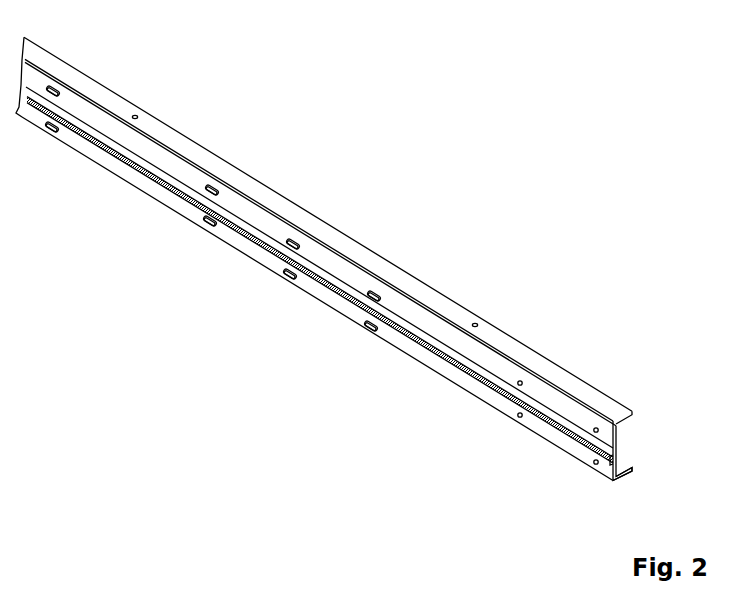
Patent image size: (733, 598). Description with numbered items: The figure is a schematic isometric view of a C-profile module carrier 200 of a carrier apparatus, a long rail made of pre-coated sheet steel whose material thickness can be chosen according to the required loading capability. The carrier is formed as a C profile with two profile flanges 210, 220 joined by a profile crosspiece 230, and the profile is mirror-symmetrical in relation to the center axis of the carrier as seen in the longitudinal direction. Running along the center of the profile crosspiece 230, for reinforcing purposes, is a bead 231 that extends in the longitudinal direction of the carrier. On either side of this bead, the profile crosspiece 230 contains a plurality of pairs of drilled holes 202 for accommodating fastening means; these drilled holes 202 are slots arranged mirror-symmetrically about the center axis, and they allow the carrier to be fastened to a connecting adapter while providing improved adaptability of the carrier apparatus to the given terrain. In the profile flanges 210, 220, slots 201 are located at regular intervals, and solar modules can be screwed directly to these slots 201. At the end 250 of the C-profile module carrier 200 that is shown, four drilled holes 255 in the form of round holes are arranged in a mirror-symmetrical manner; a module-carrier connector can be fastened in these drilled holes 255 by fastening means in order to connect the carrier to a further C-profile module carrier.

The C-profile module carrier 200 is at (358, 284).
The slots 201 is at (134, 115).
The drilled holes 202 is at (206, 227).
The profile flange 210 is at (614, 409).
The profile flange 220 is at (622, 481).
The profile crosspiece 230 is at (332, 300).
The bead 231 is at (155, 176).
The end 250 is at (631, 442).
The drilled holes 255 is at (517, 384).